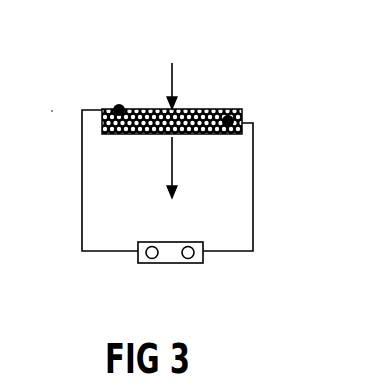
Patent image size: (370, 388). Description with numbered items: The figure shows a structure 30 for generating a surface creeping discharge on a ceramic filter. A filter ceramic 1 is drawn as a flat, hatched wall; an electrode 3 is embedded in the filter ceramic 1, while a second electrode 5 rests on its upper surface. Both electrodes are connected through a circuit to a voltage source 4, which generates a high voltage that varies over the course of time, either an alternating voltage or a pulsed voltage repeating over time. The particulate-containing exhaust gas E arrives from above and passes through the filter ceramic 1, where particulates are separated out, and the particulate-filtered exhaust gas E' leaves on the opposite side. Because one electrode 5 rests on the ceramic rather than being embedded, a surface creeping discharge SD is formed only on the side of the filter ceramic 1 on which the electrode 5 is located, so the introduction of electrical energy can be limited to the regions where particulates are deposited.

The structure 30 is at (120, 70).
The filter ceramic 1 is at (133, 136).
The electrode 5 is at (116, 106).
The electrode 3 is at (226, 112).
The voltage source 4 is at (170, 271).
The particulate-containing exhaust gas E is at (170, 70).
The particulate-filtered exhaust gas E' is at (174, 185).
The surface creeping discharge SD is at (212, 108).